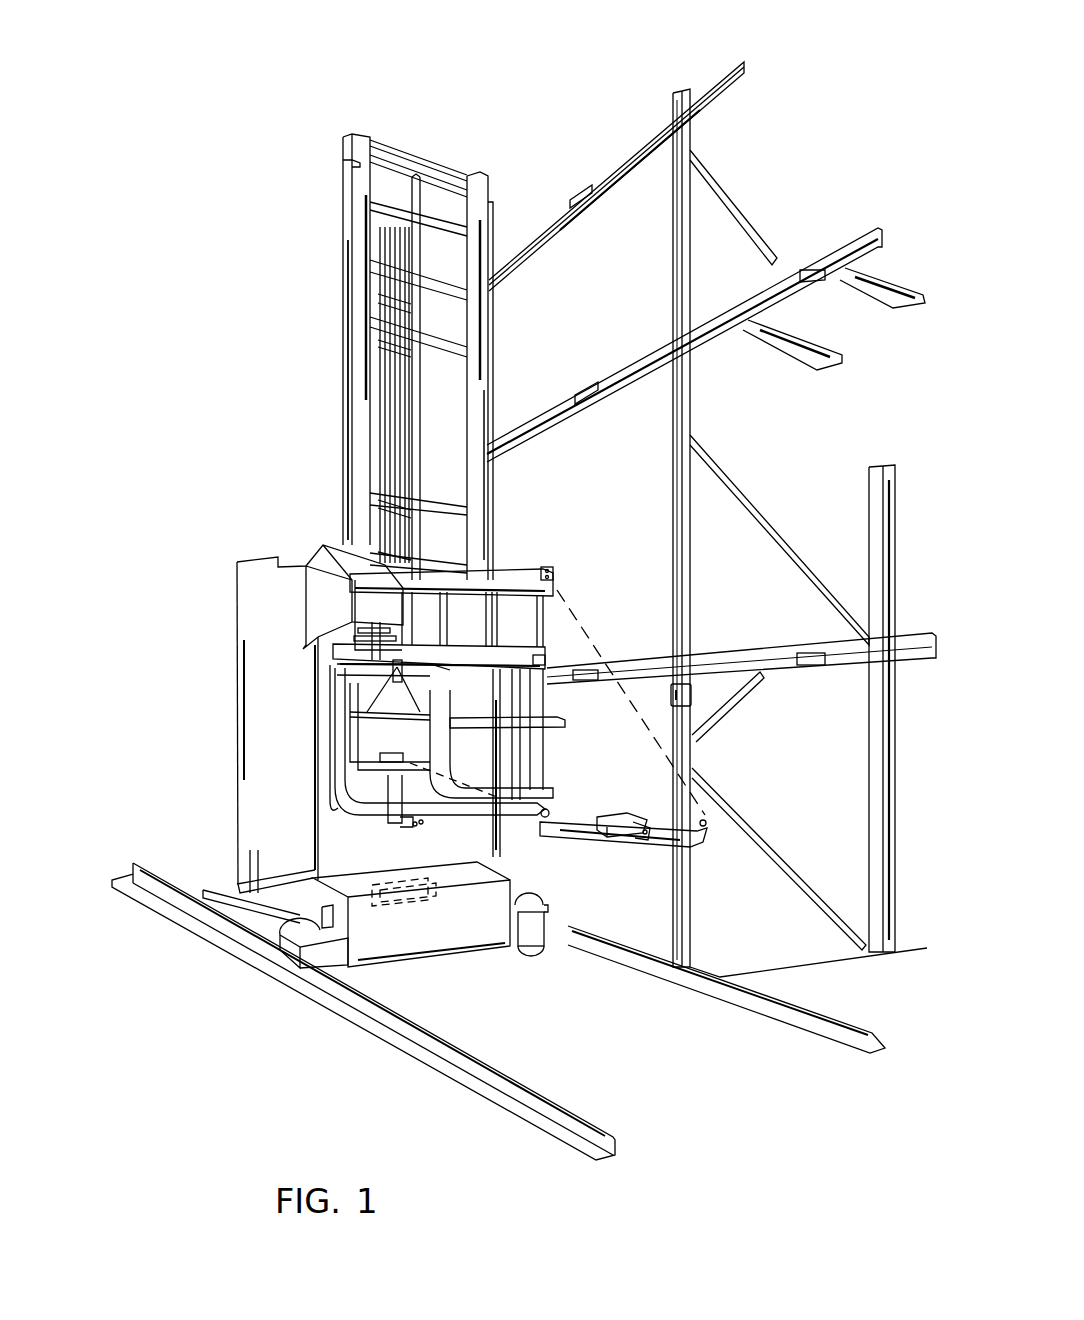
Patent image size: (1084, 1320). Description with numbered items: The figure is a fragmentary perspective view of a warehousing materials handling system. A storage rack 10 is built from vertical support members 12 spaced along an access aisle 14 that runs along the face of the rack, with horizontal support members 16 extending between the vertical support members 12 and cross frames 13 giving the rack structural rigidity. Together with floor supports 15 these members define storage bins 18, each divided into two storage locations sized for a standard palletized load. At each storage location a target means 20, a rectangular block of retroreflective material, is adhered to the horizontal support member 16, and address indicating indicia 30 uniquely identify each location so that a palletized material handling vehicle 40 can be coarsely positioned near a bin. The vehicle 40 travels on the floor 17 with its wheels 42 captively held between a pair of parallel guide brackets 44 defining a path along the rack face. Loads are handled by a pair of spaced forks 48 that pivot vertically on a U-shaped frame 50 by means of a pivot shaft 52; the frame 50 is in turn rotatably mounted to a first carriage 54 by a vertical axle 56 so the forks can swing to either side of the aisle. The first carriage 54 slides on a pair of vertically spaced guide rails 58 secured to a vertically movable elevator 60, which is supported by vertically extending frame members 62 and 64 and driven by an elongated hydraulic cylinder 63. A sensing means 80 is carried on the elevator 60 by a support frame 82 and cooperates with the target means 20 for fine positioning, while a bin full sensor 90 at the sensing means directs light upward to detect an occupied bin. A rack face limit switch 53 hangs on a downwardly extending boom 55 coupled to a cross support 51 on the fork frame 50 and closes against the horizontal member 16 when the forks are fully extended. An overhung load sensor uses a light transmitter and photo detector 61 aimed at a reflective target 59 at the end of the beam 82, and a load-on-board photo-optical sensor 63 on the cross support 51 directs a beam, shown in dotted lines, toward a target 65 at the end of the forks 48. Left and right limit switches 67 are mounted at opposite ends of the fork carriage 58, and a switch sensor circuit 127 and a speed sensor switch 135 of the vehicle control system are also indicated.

The storage rack 10 is at (597, 108).
The vertical support members 12 is at (673, 425).
The cross frames 13 is at (745, 200).
The access aisle 14 is at (695, 1080).
The floor supports 15 is at (870, 287).
The horizontal support members 16 is at (537, 262).
The floor 17 is at (606, 1039).
The storage bins 18 is at (790, 163).
The target means 20 is at (580, 200).
The address indicating indicia 30 is at (691, 692).
The palletized material handling vehicle 40 is at (275, 530).
The wheels 42 is at (575, 912).
The guide brackets 44 is at (710, 990).
The forks 48 is at (383, 812).
The U-shaped frame 50 is at (325, 740).
The cross support 51 is at (358, 768).
The pivot shaft 52 is at (410, 678).
The rack face limit switch 53 is at (420, 830).
The first carriage 54 is at (312, 600).
The boom 55 is at (392, 790).
The vertical axle 56 is at (375, 628).
The guide rails 58 is at (493, 650).
The target 59 is at (708, 824).
The elevator 60 is at (486, 616).
The light transmitter and photo detector 61 is at (553, 570).
The frame member 62 is at (365, 233).
The elongated cylinder 63 is at (418, 412).
The frame member 64 is at (480, 327).
The target 65 is at (550, 812).
The limit switches 67 is at (543, 658).
The sensing means 80 is at (620, 810).
The support frame 82 is at (570, 845).
The bin full sensor 90 is at (645, 822).
The switch sensor circuit 127 is at (436, 900).
The speed sensor switch 135 is at (335, 915).